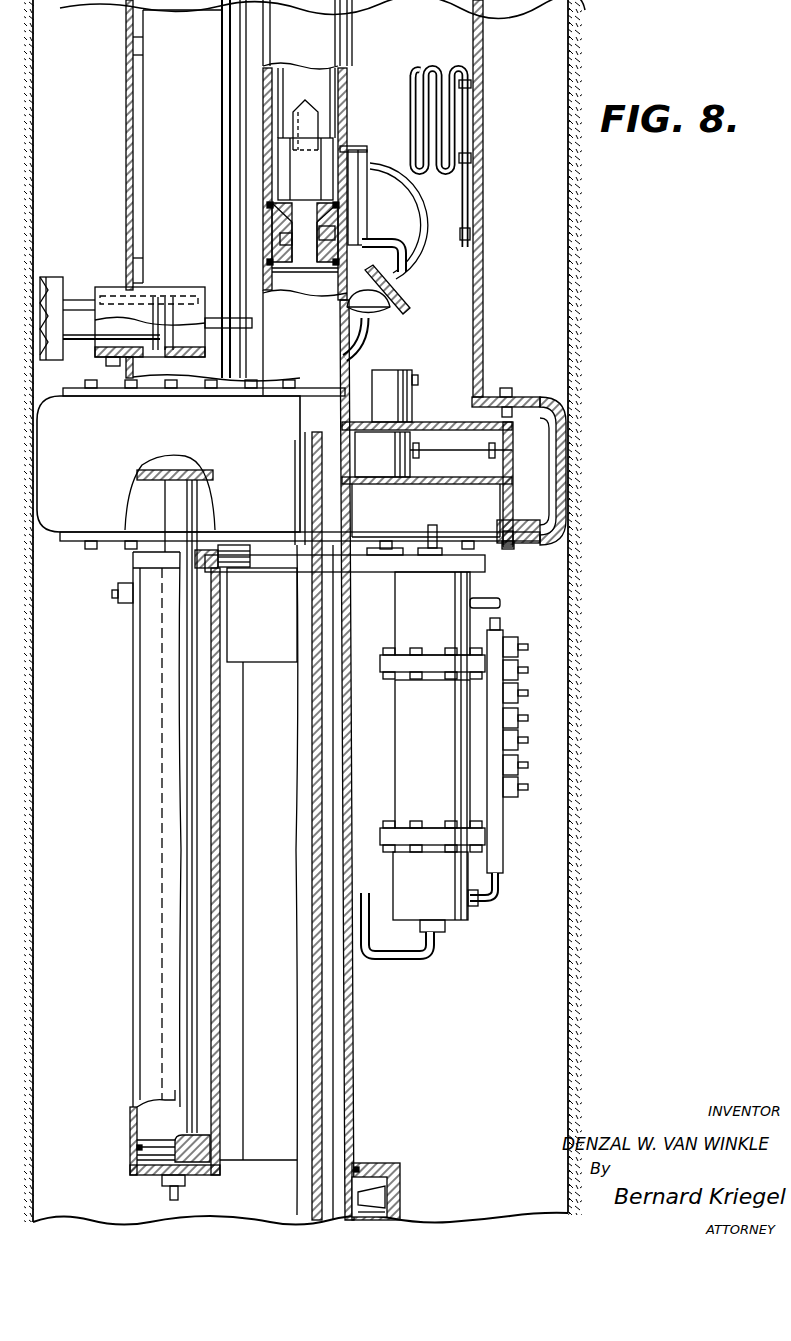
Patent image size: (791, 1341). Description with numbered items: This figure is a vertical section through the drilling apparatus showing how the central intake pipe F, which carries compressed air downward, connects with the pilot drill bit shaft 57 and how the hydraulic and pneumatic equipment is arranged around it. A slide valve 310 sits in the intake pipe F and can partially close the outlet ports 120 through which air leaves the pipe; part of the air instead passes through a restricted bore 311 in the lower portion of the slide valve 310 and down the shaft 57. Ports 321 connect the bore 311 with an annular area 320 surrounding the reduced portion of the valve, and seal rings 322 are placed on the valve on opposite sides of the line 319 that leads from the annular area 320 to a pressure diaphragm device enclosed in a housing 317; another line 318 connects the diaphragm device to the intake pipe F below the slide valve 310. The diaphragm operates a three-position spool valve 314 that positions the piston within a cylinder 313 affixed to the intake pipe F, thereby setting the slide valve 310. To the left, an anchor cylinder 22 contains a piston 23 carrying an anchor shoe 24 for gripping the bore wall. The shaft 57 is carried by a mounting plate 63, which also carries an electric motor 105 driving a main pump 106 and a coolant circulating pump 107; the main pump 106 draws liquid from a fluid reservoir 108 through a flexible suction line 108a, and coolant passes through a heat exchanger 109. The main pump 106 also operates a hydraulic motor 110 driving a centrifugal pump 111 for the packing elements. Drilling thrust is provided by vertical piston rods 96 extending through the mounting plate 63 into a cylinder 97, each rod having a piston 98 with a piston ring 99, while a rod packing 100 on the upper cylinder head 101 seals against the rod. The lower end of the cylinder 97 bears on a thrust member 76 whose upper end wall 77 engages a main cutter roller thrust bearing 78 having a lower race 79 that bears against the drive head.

The central intake pipe F is at (320, 40).
The fluid reservoir 108 is at (152, 80).
The outlet ports 120 is at (299, 110).
The heat exchanger 109 is at (452, 124).
The seal rings 322 is at (270, 204).
The slide valve 310 is at (272, 220).
The cylinder 313 is at (358, 195).
The annular area 320 is at (332, 234).
The ports 321 is at (280, 238).
The restricted bore 311 is at (295, 250).
The line 319 is at (408, 270).
The three-position spool valve 314 is at (400, 276).
The anchor shoe 24 is at (47, 288).
The housing 317 is at (380, 313).
The line 318 is at (362, 330).
The centrifugal pump 111 is at (389, 380).
The piston 23 is at (92, 325).
The anchor cylinder 22 is at (165, 352).
The hydraulic motor 110 is at (385, 465).
The piston rods 96 is at (180, 503).
The mounting plate 63 is at (462, 568).
The rod packing 100 is at (205, 572).
The upper cylinder head 101 is at (212, 572).
The coolant circulating pump 107 is at (447, 613).
The cylinder 97 is at (147, 759).
The electric motor 105 is at (432, 754).
The main pump 106 is at (430, 892).
The flexible suction line 108a is at (402, 956).
The pilot drill bit shaft 57 is at (318, 1040).
The piston 98 is at (190, 1150).
The piston ring 99 is at (137, 1149).
The upper end wall 77 is at (366, 1162).
The thrust member 76 is at (400, 1160).
The main cutter roller thrust bearing 78 is at (372, 1195).
The lower race 79 is at (382, 1212).